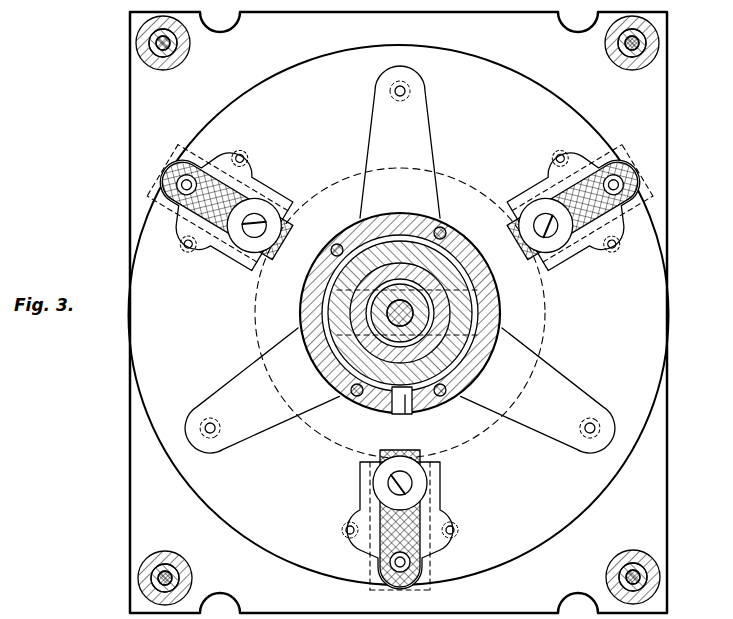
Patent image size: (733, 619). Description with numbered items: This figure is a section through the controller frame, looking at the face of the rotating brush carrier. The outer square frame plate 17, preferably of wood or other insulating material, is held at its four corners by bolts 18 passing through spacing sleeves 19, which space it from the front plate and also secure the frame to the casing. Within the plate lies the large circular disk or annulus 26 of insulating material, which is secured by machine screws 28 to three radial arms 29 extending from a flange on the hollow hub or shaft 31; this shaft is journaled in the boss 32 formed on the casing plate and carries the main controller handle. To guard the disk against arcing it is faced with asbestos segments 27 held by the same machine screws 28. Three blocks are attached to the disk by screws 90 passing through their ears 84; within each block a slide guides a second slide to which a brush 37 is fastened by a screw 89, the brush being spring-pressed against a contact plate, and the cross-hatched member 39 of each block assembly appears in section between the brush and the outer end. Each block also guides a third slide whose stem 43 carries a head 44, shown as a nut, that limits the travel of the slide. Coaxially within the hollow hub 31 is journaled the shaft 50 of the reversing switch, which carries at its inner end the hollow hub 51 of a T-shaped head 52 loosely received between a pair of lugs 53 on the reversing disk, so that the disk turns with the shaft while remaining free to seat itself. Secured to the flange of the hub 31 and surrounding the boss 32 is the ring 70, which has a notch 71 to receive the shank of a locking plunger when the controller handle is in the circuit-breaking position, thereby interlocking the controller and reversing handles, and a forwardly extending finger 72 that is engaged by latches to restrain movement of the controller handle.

The rear frame plate 17 is at (663, 499).
The bolts 18 is at (160, 41).
The spacing sleeves 19 is at (146, 60).
The disk or annulus 26 is at (506, 66).
The asbestos segments 27 is at (406, 155).
The machine screws 28 is at (403, 87).
The radial arms 29 is at (381, 118).
The hollow hub or shaft 31 is at (440, 311).
The boss 32 is at (481, 287).
The brush 37 is at (259, 214).
The clamp bar 39 is at (218, 216).
The stem 43 is at (184, 182).
The head 44 is at (190, 193).
The shaft 50 is at (453, 256).
The hollow hub 51 is at (356, 252).
The T-shaped head 52 is at (485, 292).
The lugs 53 is at (409, 226).
The ring 70 is at (301, 296).
The notch 71 is at (405, 404).
The finger 72 is at (473, 368).
The ears 84 is at (247, 168).
The screw 89 is at (251, 240).
The screws 90 is at (238, 157).